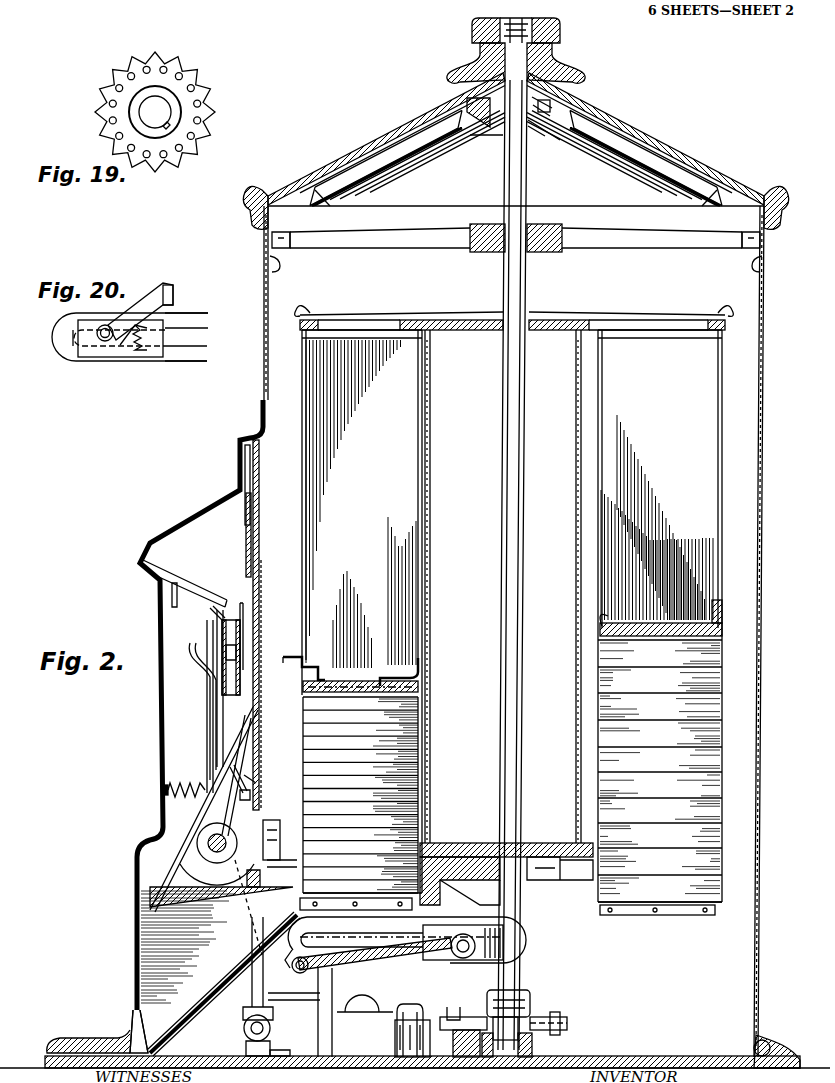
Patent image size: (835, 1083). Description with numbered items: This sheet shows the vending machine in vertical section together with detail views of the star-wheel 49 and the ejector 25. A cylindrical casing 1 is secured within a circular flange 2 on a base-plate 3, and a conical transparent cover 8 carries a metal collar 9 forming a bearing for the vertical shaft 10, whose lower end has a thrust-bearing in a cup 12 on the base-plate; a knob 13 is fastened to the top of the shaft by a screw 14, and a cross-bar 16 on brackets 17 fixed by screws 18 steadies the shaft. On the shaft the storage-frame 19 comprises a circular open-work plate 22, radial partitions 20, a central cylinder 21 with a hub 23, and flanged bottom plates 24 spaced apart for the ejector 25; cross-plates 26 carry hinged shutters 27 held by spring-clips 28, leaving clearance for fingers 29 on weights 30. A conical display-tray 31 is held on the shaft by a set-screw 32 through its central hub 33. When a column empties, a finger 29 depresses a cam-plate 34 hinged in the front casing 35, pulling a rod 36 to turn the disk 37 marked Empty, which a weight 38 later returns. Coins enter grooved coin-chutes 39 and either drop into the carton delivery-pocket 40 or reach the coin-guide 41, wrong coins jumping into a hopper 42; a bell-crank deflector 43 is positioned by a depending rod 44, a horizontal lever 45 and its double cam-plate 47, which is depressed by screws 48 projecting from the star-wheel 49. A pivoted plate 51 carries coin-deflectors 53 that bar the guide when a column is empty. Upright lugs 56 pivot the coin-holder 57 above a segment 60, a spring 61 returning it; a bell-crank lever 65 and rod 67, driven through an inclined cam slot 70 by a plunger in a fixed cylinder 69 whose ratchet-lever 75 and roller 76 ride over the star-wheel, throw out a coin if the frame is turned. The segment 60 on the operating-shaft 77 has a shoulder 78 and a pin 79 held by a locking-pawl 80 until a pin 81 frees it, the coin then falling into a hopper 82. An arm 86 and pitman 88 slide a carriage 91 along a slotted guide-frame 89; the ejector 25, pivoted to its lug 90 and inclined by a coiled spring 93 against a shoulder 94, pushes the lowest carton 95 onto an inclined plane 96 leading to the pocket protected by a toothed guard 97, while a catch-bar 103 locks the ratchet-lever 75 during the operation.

In FIG. 2, the cylindrical casing 1 is at (263, 372).
In FIG. 2, the circular flange 2 is at (765, 1044).
In FIG. 2, the base-plate 3 is at (415, 1055).
In FIG. 2, the transparent cover 8 is at (392, 134).
In FIG. 2, the metal collar 9 is at (480, 70).
In FIG. 2, the vertical shaft 10 is at (527, 184).
In FIG. 2, the cup 12 is at (532, 1042).
In FIG. 2, the knob 13 is at (472, 28).
In FIG. 2, the screw 14 is at (561, 32).
In FIG. 2, the cross-bar 16 is at (462, 249).
In FIG. 2, the brackets 17 is at (286, 250).
In FIG. 2, the screws 18 is at (276, 268).
In FIG. 2, the storage-frame 19 is at (503, 586).
In FIG. 2, the radial partitions 20 is at (512, 512).
In FIG. 2, the central cylinder 21 is at (580, 488).
In FIG. 2, the circular open-work plate 22 is at (466, 331).
In FIG. 2, the hub 23 is at (506, 839).
In FIG. 2, the flanged plates 24 is at (338, 911).
In FIG. 20, the ejector 25 is at (163, 286).
In FIG. 2, the ejector 25 is at (445, 890).
In FIG. 2, the cross-plates 26 is at (303, 800).
In FIG. 2, the shutters 27 is at (300, 630).
In FIG. 2, the spring-clips 28 is at (300, 310).
In FIG. 2, the fingers 29 is at (301, 661).
In FIG. 2, the weights 30 is at (396, 670).
In FIG. 2, the display-tray 31 is at (440, 148).
In FIG. 2, the set-screw 32 is at (552, 110).
In FIG. 2, the central hub 33 is at (535, 135).
In FIG. 2, the cam-plate 34 is at (265, 878).
In FIG. 2, the front casing 35 is at (190, 524).
In FIG. 2, the rod 36 is at (260, 530).
In FIG. 2, the disk 37 is at (245, 452).
In FIG. 2, the weight 38 is at (246, 532).
In FIG. 2, the coin-chutes 39 is at (188, 580).
In FIG. 2, the carton delivery-pocket 40 is at (147, 1031).
In FIG. 2, the coin-guide 41 is at (226, 650).
In FIG. 2, the hopper 42 is at (200, 672).
In FIG. 2, the deflector 43 is at (242, 627).
In FIG. 2, the depending rod 44 is at (391, 1025).
In FIG. 2, the horizontal lever 45 is at (380, 1060).
In FIG. 2, the double cam-plate 47 is at (466, 1060).
In FIG. 19, the screws 48 is at (212, 112).
In FIG. 2, the screws 48 is at (582, 1027).
In FIG. 19, the star-wheel 49 is at (108, 101).
In FIG. 2, the star-wheel 49 is at (543, 1016).
In FIG. 2, the plate 51 is at (222, 630).
In FIG. 2, the coin-deflectors 53 is at (222, 611).
In FIG. 2, the upright lugs 56 is at (208, 705).
In FIG. 2, the coin-holder 57 is at (217, 728).
In FIG. 2, the segment 60 is at (205, 813).
In FIG. 2, the spring 61 is at (184, 784).
In FIG. 2, the bell-crank lever 65 is at (247, 778).
In FIG. 2, the rod 67 is at (254, 990).
In FIG. 2, the fixed cylinder 69 is at (243, 1012).
In FIG. 2, the inclined slot 70 is at (244, 1029).
In FIG. 2, the ratchet-lever 75 is at (365, 1003).
In FIG. 2, the roller 76 is at (487, 998).
In FIG. 2, the operating-shaft 77 is at (212, 860).
In FIG. 2, the shoulder 78 is at (217, 830).
In FIG. 2, the pin 79 is at (277, 840).
In FIG. 2, the locking-pawl 80 is at (252, 792).
In FIG. 2, the pin 81 is at (273, 772).
In FIG. 2, the hopper 82 is at (170, 862).
In FIG. 2, the arm 86 is at (298, 972).
In FIG. 2, the pitman 88 is at (375, 960).
In FIG. 20, the slotted guide-frame 89 is at (205, 313).
In FIG. 2, the slotted guide-frame 89 is at (540, 965).
In FIG. 20, the lug 90 is at (105, 342).
In FIG. 20, the sliding block 91 is at (70, 328).
In FIG. 2, the sliding block 91 is at (522, 940).
In FIG. 20, the coiled spring 93 is at (150, 340).
In FIG. 20, the shoulder 94 is at (144, 358).
In FIG. 2, the carton 95 is at (512, 891).
In FIG. 2, the inclined plane 96 is at (238, 970).
In FIG. 2, the toothed guard 97 is at (263, 892).
In FIG. 2, the catch-bar 103 is at (280, 1058).